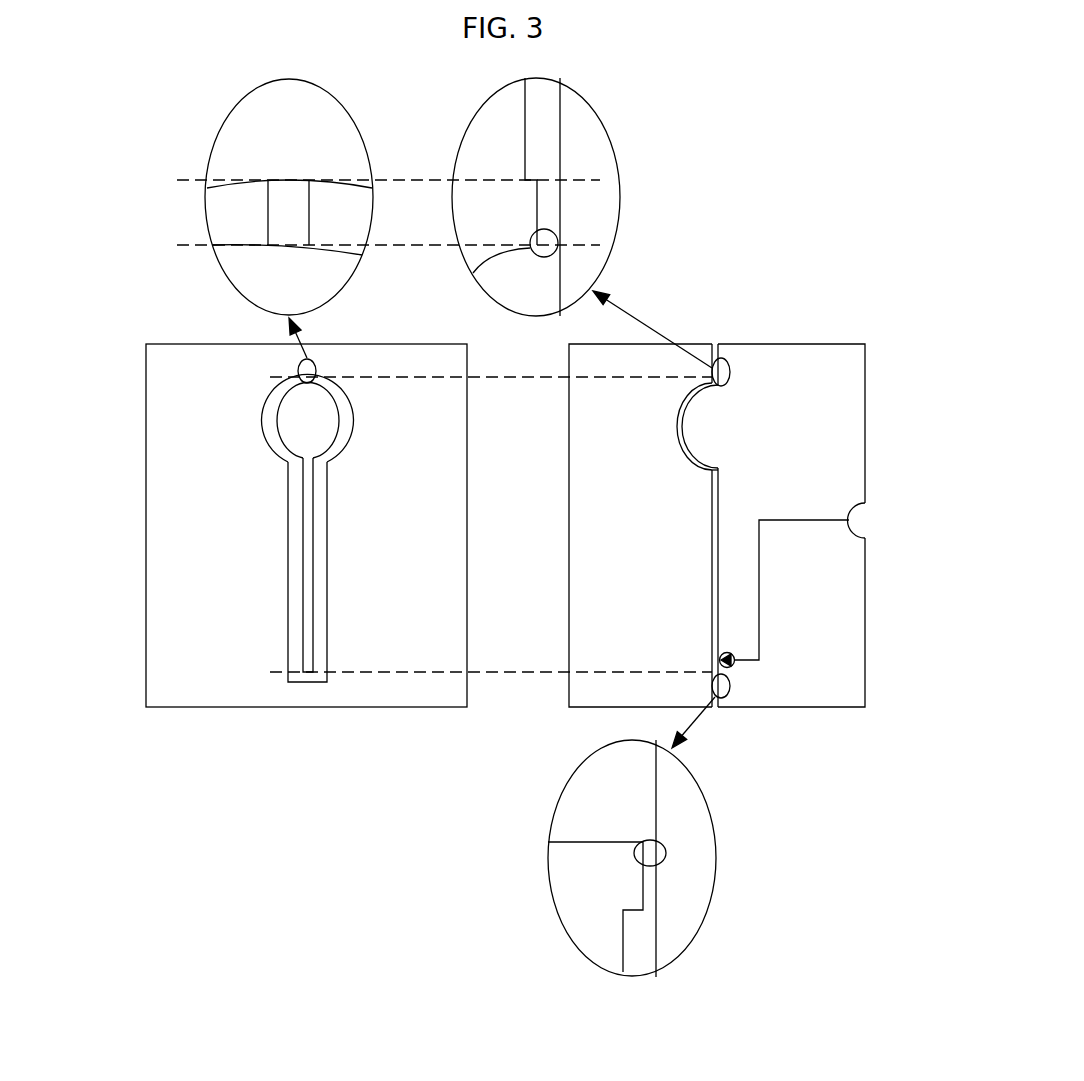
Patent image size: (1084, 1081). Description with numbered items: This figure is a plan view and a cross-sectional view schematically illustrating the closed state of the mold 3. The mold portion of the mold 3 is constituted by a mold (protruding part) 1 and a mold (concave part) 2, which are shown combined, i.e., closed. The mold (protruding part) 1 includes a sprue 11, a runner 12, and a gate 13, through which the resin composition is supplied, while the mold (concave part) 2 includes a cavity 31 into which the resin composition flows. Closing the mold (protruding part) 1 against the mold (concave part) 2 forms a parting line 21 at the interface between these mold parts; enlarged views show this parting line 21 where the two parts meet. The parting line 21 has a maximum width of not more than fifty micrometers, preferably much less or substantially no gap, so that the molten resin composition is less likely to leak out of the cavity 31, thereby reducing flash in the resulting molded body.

The mold (protruding part) 1 is at (822, 343).
The mold (concave part) 2 is at (597, 343).
The mold 3 is at (191, 343).
The sprue 11 is at (804, 518).
The runner 12 is at (760, 608).
The gate 13 is at (733, 667).
The parting line 21 is at (303, 495).
The cavity 31 is at (267, 422).